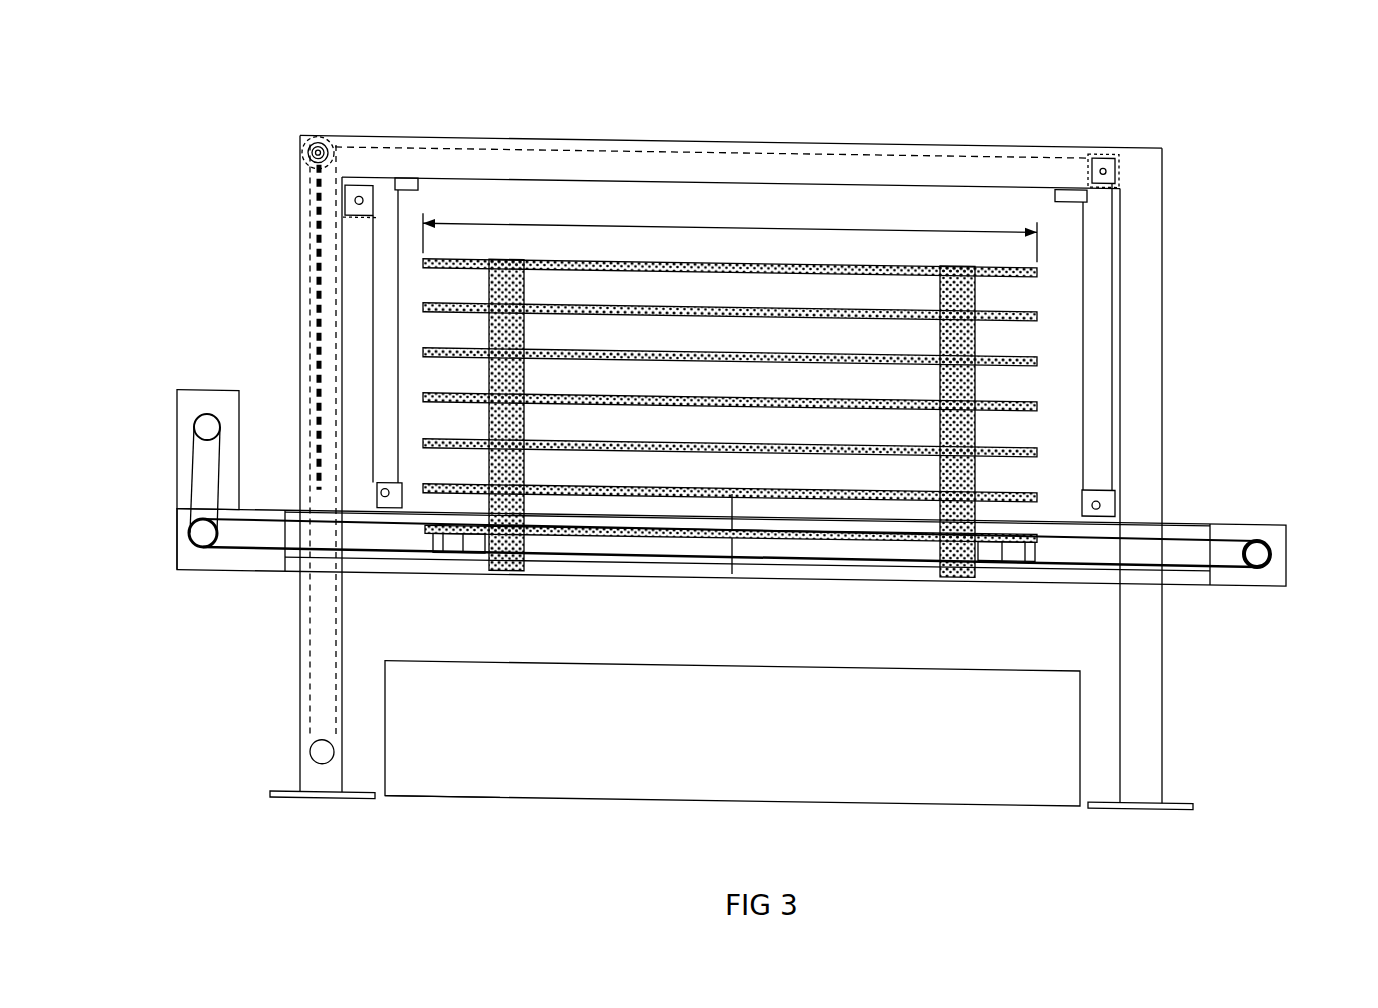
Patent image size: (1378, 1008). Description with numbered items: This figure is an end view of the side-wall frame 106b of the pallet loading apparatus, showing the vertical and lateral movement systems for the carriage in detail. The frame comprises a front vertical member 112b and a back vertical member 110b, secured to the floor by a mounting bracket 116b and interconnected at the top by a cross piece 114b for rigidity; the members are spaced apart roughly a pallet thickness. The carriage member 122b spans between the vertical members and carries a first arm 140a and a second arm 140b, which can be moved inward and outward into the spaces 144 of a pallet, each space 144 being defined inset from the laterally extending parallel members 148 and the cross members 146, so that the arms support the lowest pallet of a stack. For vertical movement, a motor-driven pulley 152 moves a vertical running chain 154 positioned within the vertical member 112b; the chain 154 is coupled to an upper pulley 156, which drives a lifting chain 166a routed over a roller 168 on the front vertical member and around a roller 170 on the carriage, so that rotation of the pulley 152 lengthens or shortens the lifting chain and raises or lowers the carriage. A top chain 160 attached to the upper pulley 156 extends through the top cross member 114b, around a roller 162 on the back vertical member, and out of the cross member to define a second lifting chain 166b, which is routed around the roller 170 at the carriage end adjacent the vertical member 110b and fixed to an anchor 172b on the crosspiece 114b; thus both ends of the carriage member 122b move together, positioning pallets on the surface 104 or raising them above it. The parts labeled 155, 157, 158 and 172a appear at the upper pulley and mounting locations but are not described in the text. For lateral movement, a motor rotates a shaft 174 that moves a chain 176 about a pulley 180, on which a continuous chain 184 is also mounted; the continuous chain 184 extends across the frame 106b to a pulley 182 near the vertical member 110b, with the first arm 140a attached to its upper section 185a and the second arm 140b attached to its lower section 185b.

The surface 104 is at (732, 777).
The side-wall frame 106b is at (711, 448).
The vertical member 110b is at (1172, 478).
The vertical member 112b is at (300, 816).
The cross piece 114b is at (731, 139).
The mounting bracket 116b is at (442, 821).
The carriage member 122b is at (761, 558).
The first arm 140a is at (499, 586).
The second arm 140b is at (970, 598).
The space 144 is at (843, 356).
The cross member 146 is at (732, 437).
The laterally extending parallel member 148 is at (731, 576).
The pulley 152 is at (269, 767).
The vertical running chain 154 is at (254, 463).
The pulley bracket 155 is at (358, 130).
The upper pulley 156 is at (284, 104).
The shaft 157 is at (282, 116).
The bearing 158 is at (280, 128).
The top chain 160 is at (648, 203).
The roller 162 is at (1133, 153).
The lifting chain 166a is at (301, 333).
The lifting chain 166b is at (1135, 336).
The roller 168 is at (450, 122).
The roller 170 is at (820, 467).
The left upper mount 172a is at (496, 124).
The anchor 172b is at (1010, 135).
The shaft 174 is at (168, 580).
The chain 176 is at (235, 429).
The pulley 180 is at (723, 497).
The pulley 182 is at (1283, 535).
The continuous chain 184 is at (1259, 618).
The upper section 185a is at (345, 585).
The lower section 185b is at (196, 594).